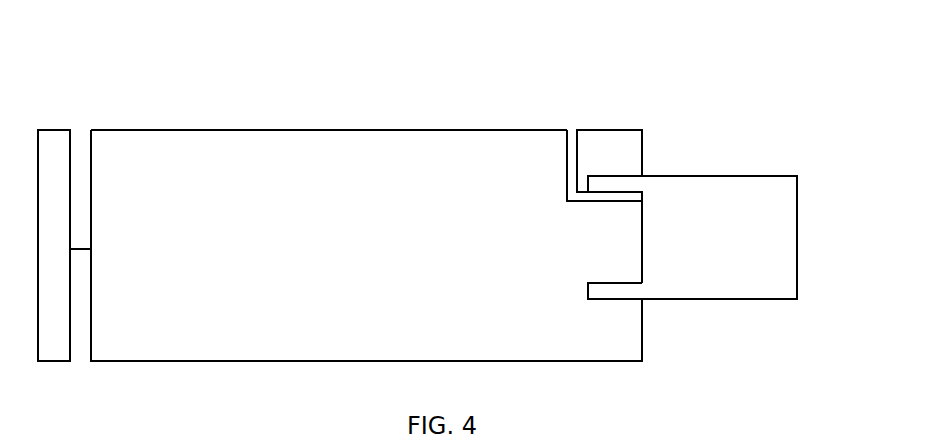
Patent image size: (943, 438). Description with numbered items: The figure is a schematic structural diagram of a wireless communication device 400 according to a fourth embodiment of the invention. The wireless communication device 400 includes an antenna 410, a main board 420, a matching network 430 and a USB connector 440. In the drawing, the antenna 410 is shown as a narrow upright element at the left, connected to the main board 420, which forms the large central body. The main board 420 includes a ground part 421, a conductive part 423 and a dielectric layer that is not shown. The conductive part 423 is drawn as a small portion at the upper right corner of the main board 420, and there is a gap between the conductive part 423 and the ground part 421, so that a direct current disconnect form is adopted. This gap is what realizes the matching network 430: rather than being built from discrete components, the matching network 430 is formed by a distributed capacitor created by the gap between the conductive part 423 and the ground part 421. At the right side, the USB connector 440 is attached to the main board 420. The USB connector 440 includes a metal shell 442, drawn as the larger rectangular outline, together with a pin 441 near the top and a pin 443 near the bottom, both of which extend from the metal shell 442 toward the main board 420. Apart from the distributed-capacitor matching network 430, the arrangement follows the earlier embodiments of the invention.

The wireless communication device 400 is at (384, 31).
The antenna 410 is at (124, 215).
The main board 420 is at (366, 208).
The ground part 421 is at (329, 109).
The conductive part 423 is at (515, 144).
The matching network 430 is at (536, 177).
The USB connector 440 is at (713, 222).
The pin 441 is at (659, 164).
The metal shell 442 is at (731, 224).
The pin 443 is at (684, 323).